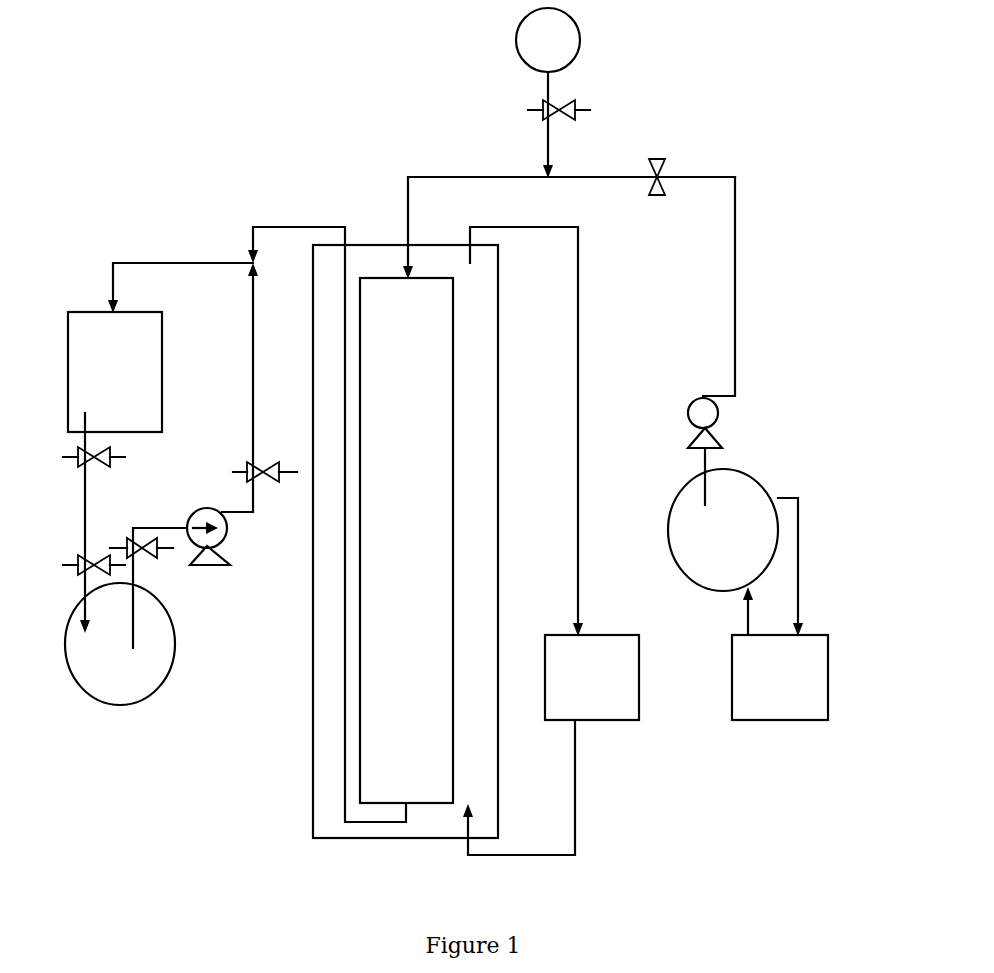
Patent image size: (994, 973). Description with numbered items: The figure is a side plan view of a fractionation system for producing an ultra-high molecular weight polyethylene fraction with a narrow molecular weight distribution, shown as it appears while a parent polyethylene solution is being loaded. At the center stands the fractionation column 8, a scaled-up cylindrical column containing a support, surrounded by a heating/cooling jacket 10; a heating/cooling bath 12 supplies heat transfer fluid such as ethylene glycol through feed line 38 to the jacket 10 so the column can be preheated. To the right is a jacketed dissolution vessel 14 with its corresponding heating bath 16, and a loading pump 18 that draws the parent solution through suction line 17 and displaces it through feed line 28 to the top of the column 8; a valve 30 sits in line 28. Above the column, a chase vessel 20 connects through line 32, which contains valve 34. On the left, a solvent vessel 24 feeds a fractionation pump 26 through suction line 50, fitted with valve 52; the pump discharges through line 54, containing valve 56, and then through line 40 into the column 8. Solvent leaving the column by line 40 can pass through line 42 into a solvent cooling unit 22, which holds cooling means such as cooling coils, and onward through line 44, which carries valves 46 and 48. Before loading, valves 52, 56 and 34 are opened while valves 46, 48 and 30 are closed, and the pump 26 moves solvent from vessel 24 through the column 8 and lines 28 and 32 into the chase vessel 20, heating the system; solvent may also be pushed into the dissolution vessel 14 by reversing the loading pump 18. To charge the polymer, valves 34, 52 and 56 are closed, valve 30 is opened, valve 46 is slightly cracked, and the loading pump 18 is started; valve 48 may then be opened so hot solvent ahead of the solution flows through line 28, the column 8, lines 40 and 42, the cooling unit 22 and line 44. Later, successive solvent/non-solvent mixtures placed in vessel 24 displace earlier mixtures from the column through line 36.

The fractionation column 8 is at (392, 541).
The heating/cooling jacket 10 is at (462, 496).
The heating/cooling bath 12 is at (579, 688).
The jacketed dissolution vessel 14 is at (712, 542).
The heating bath 16 is at (765, 688).
The suction line 17 is at (702, 468).
The loading pump 18 is at (718, 420).
The chase vessel 20 is at (538, 51).
The solvent cooling unit 22 is at (102, 383).
The solvent vessel 24 is at (102, 668).
The fractionation pump 26 is at (230, 537).
The feed line 28 is at (737, 252).
The valve 30 is at (660, 157).
The line 32 is at (548, 150).
The valve 34 is at (562, 100).
The line 36 is at (578, 352).
The feed line 38 is at (577, 810).
The line 40 is at (298, 226).
The line 42 is at (172, 262).
The line 44 is at (83, 510).
The valve 46 is at (110, 462).
The valve 48 is at (80, 558).
The suction line 50 is at (133, 625).
The valve 52 is at (150, 557).
The line 54 is at (252, 414).
The valve 56 is at (264, 460).